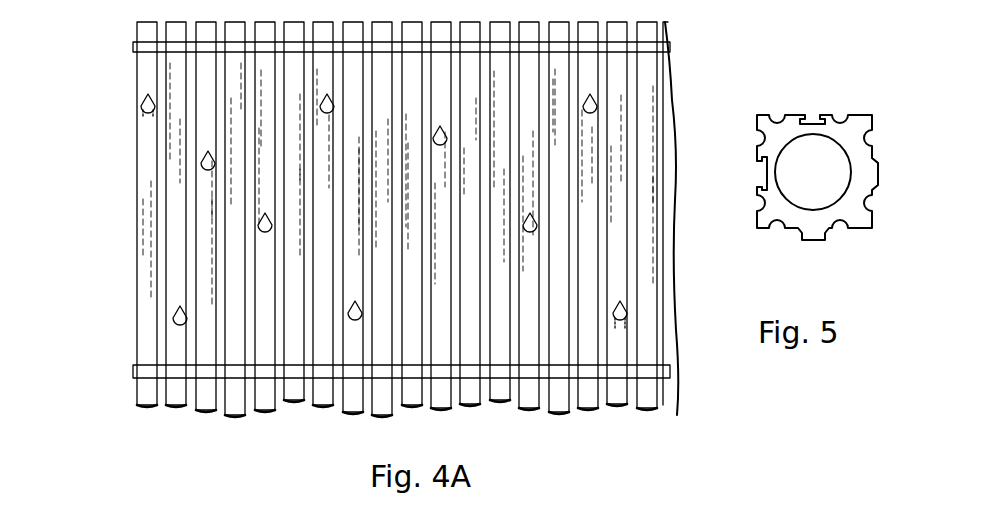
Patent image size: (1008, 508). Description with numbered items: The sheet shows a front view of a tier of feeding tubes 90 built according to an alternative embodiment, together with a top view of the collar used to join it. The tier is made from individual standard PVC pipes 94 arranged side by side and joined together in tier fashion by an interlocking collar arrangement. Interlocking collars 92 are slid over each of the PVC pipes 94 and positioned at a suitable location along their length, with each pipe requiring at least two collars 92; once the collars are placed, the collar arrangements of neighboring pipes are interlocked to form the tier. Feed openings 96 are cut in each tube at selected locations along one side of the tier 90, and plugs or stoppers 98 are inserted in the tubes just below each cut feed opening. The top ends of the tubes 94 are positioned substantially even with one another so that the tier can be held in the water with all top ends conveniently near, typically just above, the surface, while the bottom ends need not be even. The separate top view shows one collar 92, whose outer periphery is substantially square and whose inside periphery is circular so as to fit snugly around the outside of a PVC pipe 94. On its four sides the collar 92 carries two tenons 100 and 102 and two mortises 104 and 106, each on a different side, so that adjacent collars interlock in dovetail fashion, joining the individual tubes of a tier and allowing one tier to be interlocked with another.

In FIG. 4A, the tier of feeding tubes 90 is at (381, 225).
In FIG. 4A, the interlocking collar 92 is at (137, 42).
In FIG. 5, the interlocking collar 92 is at (805, 222).
In FIG. 4A, the PVC pipe 94 is at (146, 308).
In FIG. 4A, the feed opening 96 is at (143, 102).
In FIG. 4A, the plug or stopper 98 is at (146, 115).
In FIG. 5, the tenon 100 is at (808, 180).
In FIG. 5, the tenon 102 is at (879, 172).
In FIG. 5, the mortise 104 is at (758, 172).
In FIG. 5, the mortise 106 is at (836, 84).